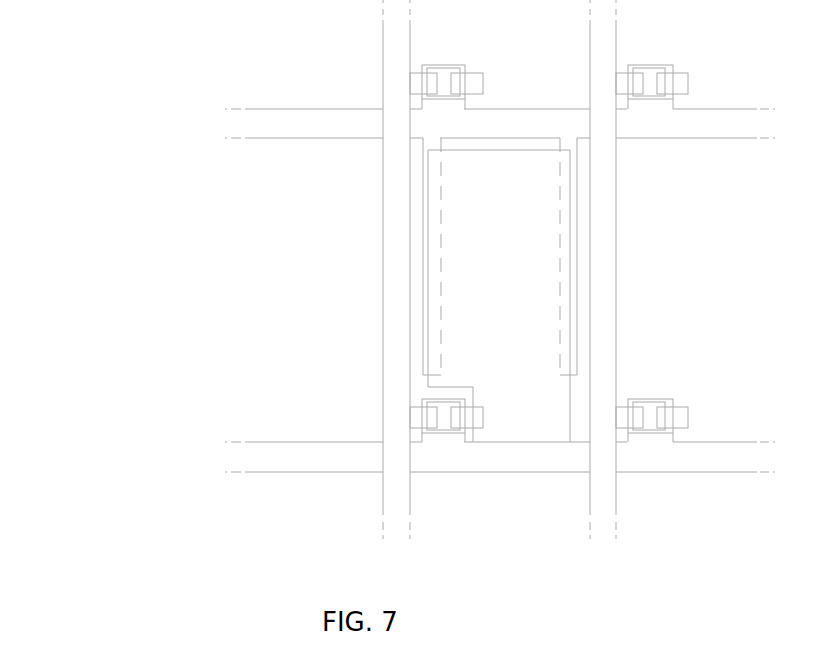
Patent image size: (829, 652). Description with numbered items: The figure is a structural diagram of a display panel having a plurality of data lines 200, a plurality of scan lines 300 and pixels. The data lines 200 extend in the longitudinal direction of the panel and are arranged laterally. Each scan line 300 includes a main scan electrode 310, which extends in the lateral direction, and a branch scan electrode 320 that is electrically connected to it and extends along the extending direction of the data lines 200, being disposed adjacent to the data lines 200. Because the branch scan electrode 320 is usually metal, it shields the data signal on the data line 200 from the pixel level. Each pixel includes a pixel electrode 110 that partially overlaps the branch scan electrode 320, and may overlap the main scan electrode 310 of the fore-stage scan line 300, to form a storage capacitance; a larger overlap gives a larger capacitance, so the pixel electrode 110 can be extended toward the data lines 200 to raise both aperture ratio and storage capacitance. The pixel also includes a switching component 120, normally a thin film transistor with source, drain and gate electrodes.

The data line 200 is at (392, 85).
The pixel electrode 110 is at (523, 395).
The switching component 120 is at (443, 421).
The scan line 300 is at (307, 273).
The main scan electrode 310 is at (272, 127).
The branch scan electrode 320 is at (425, 203).